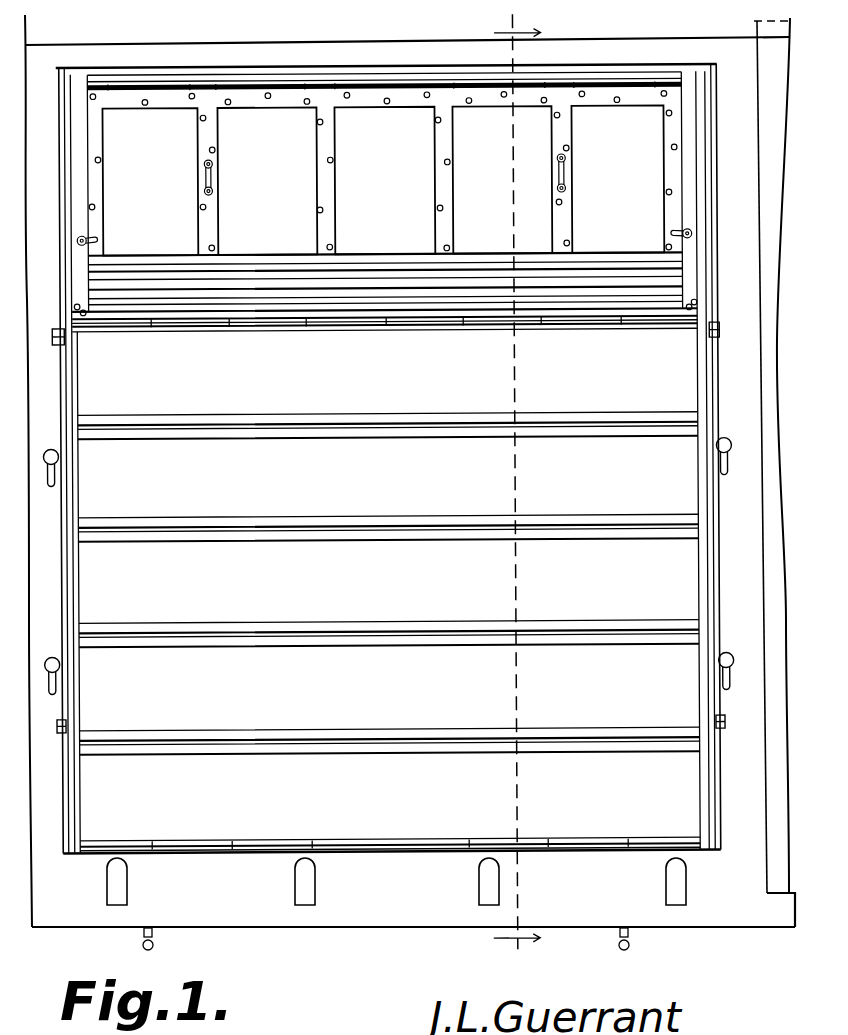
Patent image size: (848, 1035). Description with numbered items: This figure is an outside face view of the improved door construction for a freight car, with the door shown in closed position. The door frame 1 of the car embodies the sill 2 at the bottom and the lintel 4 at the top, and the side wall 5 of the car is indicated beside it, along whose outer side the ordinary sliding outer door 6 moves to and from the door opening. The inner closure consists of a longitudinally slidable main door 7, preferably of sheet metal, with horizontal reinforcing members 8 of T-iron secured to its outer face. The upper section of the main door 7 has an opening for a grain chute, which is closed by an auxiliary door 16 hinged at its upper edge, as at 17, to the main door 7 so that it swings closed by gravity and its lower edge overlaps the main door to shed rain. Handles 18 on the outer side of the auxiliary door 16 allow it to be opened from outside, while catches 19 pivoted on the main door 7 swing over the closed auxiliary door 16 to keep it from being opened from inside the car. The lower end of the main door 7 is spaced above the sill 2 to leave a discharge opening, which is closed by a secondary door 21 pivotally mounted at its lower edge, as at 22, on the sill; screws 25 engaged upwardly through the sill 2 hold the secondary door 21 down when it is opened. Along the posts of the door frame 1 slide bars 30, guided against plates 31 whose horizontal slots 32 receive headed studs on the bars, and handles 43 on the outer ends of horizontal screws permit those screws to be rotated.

The door frame 1 is at (236, 929).
The sill 2 is at (517, 487).
The lintel 4 is at (308, 63).
The side wall 5 is at (785, 920).
The sliding outer door 6 is at (778, 882).
The main door 7 is at (680, 494).
The horizontal reinforcing members 8 is at (418, 532).
The auxiliary door 16 is at (392, 243).
The hinge 17 is at (375, 88).
The handles 18 is at (215, 173).
The catches 19 is at (88, 231).
The secondary door 21 is at (430, 757).
The pivot 22 is at (301, 836).
The screws 25 is at (157, 934).
The bars 30 is at (72, 491).
The plates 31 is at (70, 810).
The horizontal slots 32 is at (63, 338).
The handles 43 is at (57, 468).